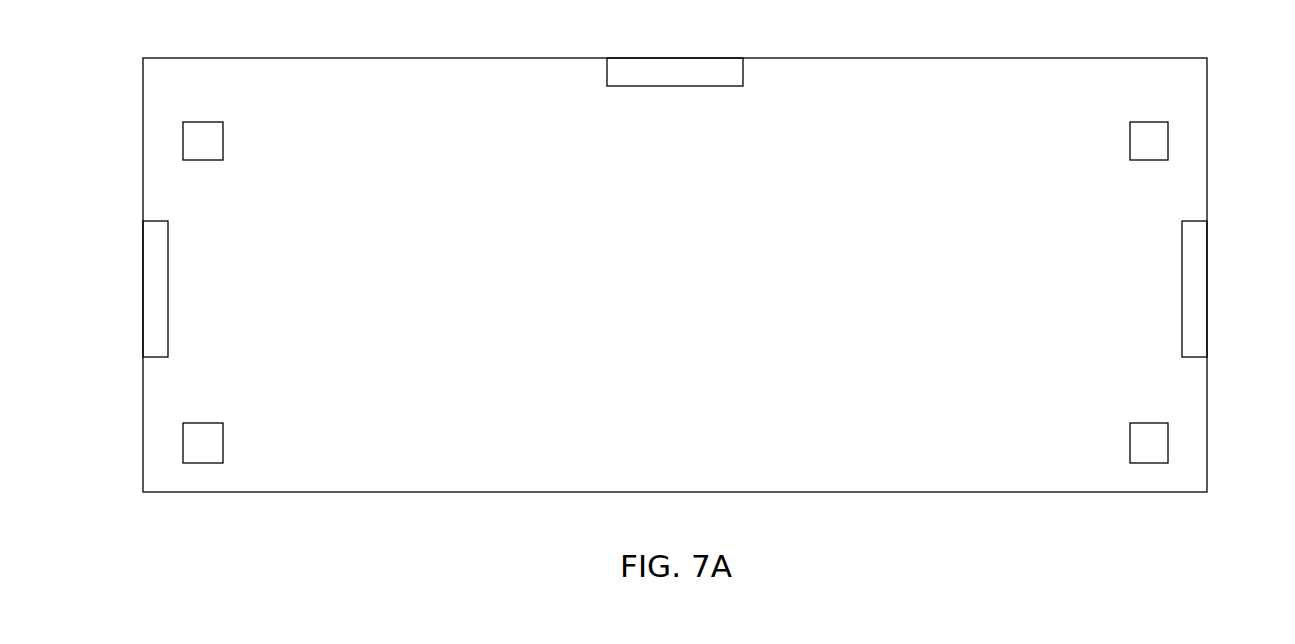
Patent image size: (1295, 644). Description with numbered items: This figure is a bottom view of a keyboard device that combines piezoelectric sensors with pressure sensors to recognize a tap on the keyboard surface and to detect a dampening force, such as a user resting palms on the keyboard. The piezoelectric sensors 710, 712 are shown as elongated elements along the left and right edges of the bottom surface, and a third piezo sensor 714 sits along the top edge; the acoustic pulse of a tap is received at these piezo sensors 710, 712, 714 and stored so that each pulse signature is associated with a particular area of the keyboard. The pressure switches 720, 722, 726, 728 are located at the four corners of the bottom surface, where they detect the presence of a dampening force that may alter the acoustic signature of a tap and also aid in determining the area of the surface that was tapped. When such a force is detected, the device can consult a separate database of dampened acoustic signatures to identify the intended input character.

The piezoelectric sensor 710 is at (153, 257).
The piezoelectric sensor 712 is at (1194, 241).
The piezoelectric sensor 714 is at (640, 70).
The pressure switch 720 is at (205, 443).
The pressure switch 722 is at (1152, 445).
The pressure switch 726 is at (204, 138).
The pressure switch 728 is at (1148, 138).